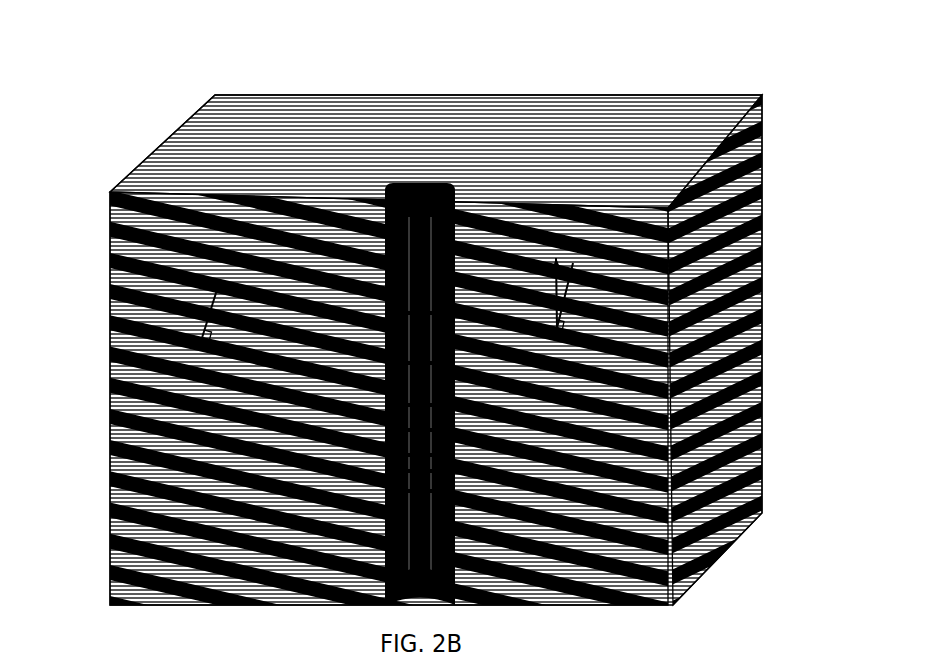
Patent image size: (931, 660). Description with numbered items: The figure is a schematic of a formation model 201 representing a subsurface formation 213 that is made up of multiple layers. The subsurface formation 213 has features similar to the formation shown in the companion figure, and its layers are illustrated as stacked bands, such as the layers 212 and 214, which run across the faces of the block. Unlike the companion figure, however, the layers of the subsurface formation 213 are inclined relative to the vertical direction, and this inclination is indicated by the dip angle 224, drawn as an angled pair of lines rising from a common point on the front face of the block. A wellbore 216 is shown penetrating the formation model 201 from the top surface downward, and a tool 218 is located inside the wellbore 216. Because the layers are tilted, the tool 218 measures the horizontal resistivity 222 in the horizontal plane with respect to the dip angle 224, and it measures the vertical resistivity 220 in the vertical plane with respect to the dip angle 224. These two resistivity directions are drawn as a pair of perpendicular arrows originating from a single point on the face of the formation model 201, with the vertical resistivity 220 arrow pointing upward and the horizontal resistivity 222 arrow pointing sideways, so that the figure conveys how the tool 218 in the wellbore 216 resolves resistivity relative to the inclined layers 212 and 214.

The formation model 201 is at (95, 78).
The layer 212 is at (110, 335).
The subsurface formation 213 is at (143, 157).
The layer 214 is at (110, 382).
The wellbore 216 is at (386, 563).
The tool 218 is at (437, 545).
The vertical resistivity 220 is at (204, 294).
The horizontal resistivity 222 is at (248, 362).
The dip angle 224 is at (552, 268).